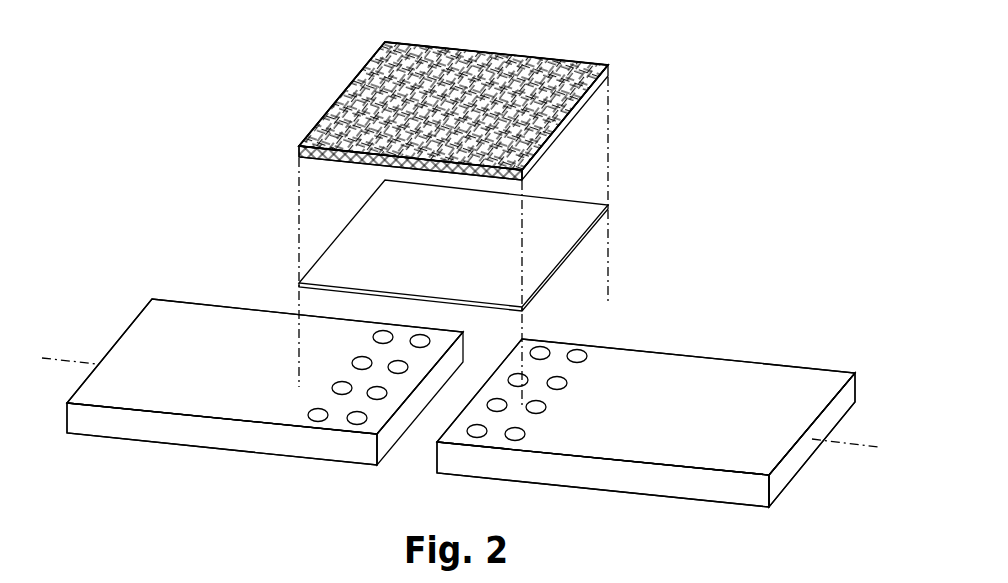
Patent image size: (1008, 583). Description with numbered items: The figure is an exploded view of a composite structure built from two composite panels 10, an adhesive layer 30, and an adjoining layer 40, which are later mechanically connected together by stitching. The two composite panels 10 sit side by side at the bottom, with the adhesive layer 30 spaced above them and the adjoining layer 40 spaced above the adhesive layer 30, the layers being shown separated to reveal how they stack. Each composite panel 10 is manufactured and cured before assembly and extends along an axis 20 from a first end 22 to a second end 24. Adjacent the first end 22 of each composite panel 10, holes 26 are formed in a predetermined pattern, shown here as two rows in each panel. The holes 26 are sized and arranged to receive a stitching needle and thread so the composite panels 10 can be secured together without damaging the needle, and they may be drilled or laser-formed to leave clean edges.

The composite panel 10 is at (175, 297).
The axis 20 is at (863, 444).
The first end 22 is at (368, 452).
The second end 24 is at (103, 428).
The holes 26 is at (367, 393).
The adhesive layer 30 is at (573, 210).
The adjoining layer 40 is at (563, 70).